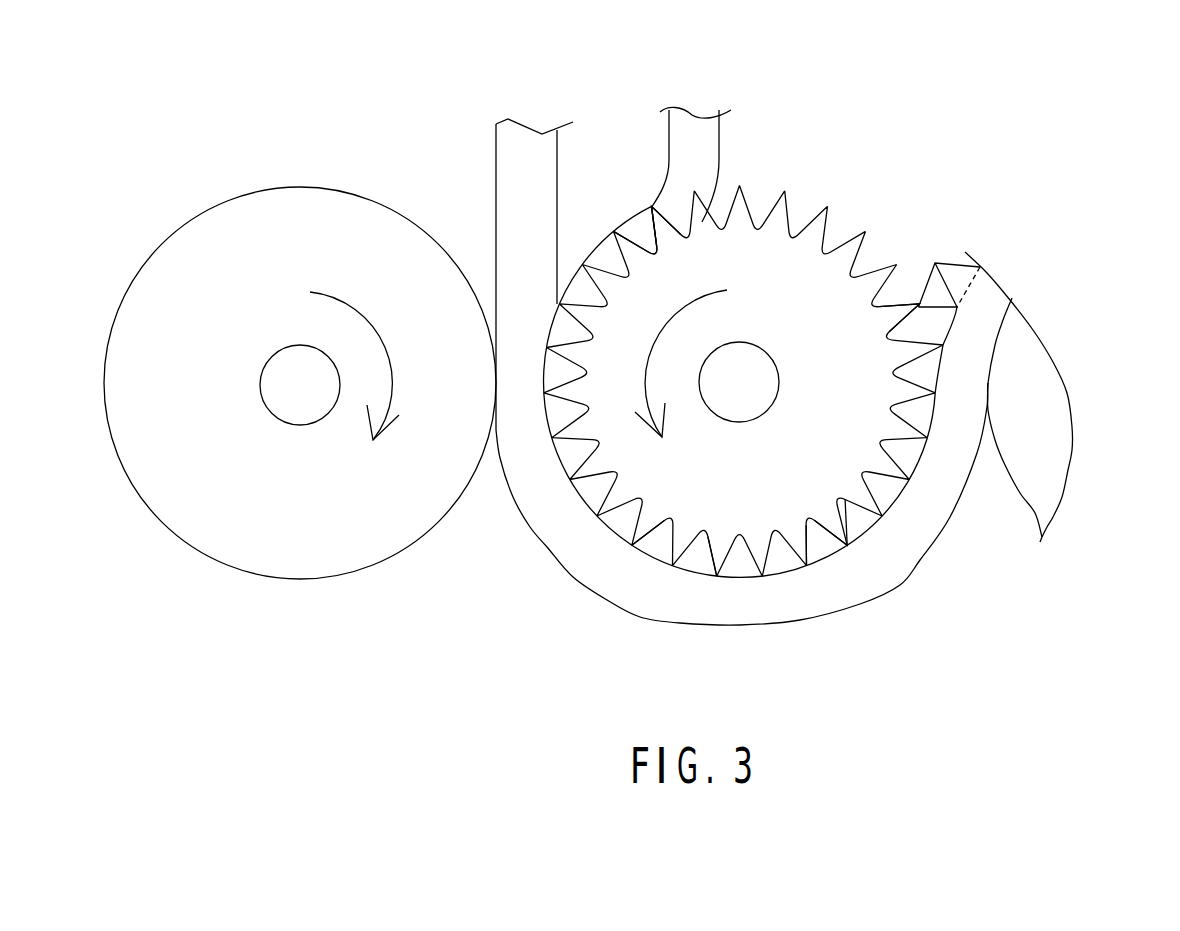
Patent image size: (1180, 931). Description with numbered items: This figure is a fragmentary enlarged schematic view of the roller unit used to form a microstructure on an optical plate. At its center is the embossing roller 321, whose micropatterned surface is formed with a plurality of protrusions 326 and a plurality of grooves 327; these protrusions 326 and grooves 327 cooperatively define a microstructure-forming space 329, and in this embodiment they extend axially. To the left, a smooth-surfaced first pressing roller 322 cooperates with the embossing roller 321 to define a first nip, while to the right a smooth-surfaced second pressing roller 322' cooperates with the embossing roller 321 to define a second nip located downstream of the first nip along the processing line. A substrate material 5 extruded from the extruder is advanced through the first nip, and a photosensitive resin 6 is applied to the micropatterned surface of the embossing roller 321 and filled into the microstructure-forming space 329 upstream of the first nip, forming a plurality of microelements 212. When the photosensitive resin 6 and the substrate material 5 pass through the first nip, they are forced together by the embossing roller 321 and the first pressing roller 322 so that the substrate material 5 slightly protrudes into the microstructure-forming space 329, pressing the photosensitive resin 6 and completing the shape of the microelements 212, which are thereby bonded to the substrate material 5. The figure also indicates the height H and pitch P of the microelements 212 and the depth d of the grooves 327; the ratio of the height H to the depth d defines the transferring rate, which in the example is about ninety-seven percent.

The substrate material 5 is at (522, 171).
The photosensitive resin 6 is at (708, 135).
The microelements 212 is at (855, 517).
The embossing roller 321 is at (828, 183).
The first pressing roller 322 is at (300, 362).
The second pressing roller 322' is at (1049, 397).
The protrusions 326 is at (650, 212).
The grooves 327 is at (653, 247).
The microstructure-forming space 329 is at (762, 195).
The depth of the grooves d is at (855, 273).
The pitch of the microelements P is at (918, 307).
The height of the microelement H is at (962, 276).